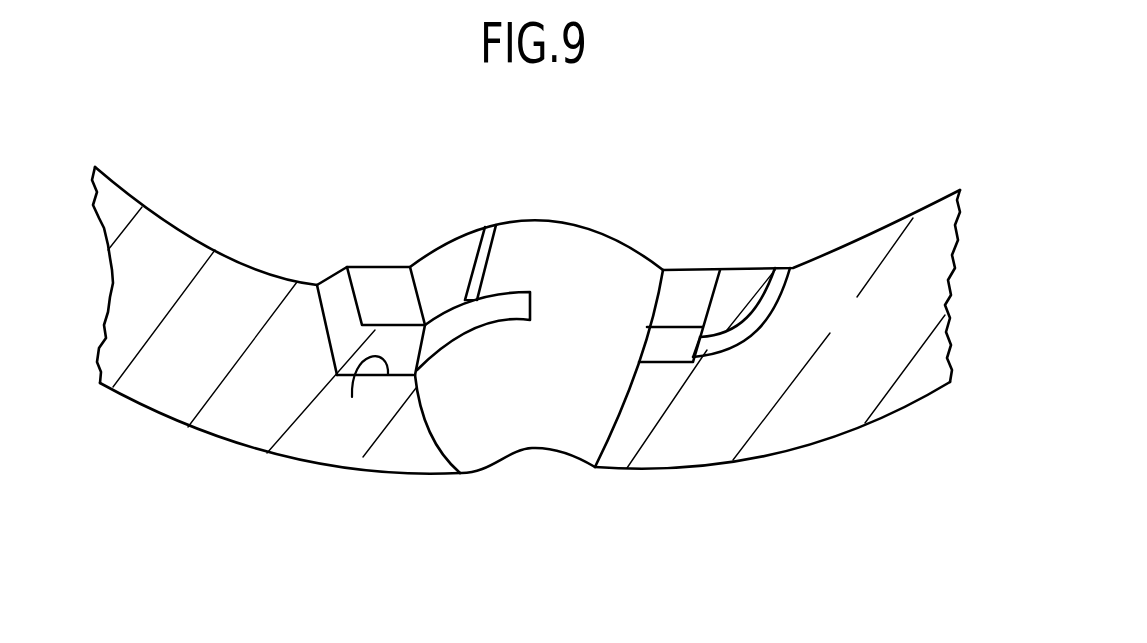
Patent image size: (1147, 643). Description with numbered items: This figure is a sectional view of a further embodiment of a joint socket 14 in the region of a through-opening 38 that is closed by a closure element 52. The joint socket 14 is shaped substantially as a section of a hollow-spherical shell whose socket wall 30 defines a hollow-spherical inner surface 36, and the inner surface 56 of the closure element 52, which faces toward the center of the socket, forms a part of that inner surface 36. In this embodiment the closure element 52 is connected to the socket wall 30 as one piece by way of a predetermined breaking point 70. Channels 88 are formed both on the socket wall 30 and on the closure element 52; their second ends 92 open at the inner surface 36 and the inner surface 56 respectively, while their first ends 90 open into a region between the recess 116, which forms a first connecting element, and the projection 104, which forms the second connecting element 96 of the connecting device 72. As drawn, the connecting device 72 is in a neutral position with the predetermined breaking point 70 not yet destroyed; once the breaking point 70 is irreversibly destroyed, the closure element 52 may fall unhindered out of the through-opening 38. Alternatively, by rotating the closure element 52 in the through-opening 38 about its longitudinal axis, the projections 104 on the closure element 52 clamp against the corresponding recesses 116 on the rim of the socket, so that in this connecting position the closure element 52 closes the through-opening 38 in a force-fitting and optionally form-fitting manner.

The joint socket 14 is at (484, 489).
The socket wall 30 is at (167, 253).
The inner surface 36 is at (887, 235).
The through-opening 38 is at (630, 382).
The closure element 52 is at (623, 268).
The inner surface 56 is at (580, 222).
The predetermined breaking point 70 is at (692, 298).
The connecting device 72 is at (325, 252).
The channels 88 is at (480, 260).
The first ends 90 is at (472, 300).
The second end 92 is at (485, 227).
The second connecting element 96 is at (342, 333).
The projection 104 is at (388, 290).
The recess 116 is at (352, 397).